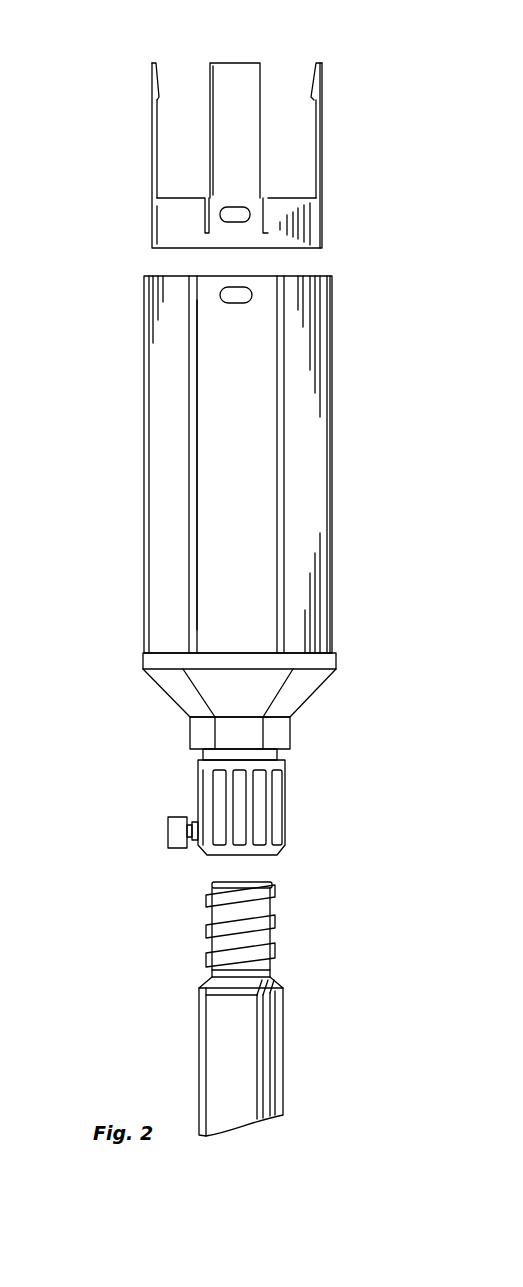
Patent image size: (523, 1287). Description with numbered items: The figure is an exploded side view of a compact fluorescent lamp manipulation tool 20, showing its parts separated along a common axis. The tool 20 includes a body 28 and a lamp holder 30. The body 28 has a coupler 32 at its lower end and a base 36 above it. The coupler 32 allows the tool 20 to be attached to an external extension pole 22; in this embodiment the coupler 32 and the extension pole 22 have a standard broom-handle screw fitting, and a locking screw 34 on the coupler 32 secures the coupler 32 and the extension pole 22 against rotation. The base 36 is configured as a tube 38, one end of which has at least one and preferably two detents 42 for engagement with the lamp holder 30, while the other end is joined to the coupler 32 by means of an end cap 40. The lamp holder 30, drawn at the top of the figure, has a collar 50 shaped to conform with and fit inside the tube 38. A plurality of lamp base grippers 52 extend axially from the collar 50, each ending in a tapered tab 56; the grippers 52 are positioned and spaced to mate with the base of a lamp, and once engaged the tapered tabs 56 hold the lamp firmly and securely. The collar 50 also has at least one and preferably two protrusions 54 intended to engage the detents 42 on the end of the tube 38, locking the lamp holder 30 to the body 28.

The tool 20 is at (128, 332).
The extension pole 22 is at (212, 1050).
The body 28 is at (345, 495).
The lamp holder 30 is at (328, 147).
The coupler 32 is at (198, 798).
The locking screw 34 is at (168, 835).
The base 36 is at (220, 682).
The tube 38 is at (212, 463).
The end cap 40 is at (297, 688).
The detent 42 is at (240, 293).
The collar 50 is at (308, 230).
The lamp base gripper 52 is at (152, 117).
The protrusion 54 is at (236, 212).
The tapered tab 56 is at (312, 87).